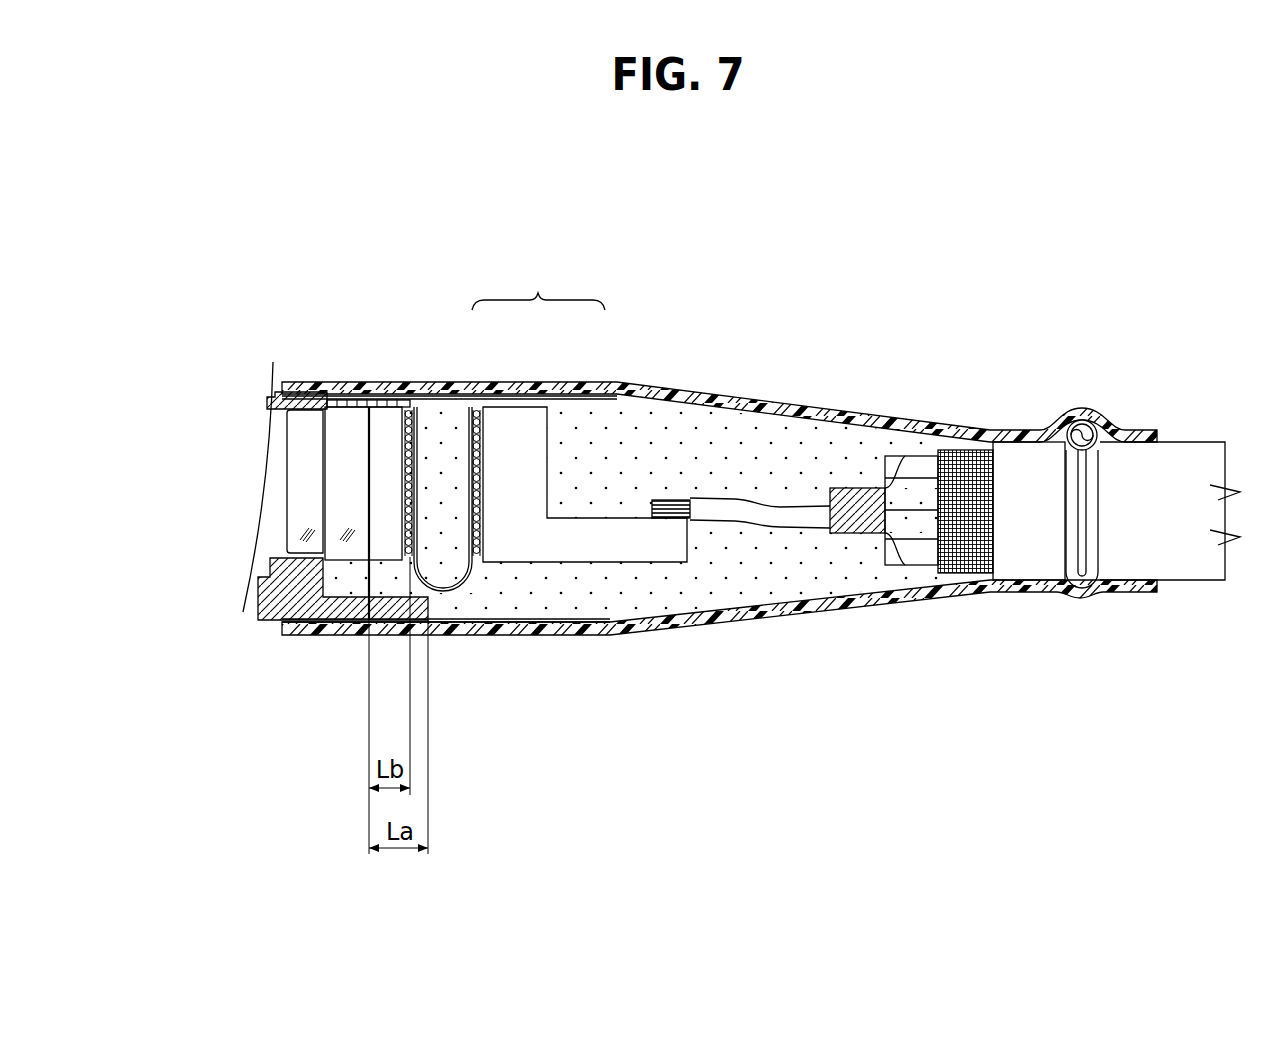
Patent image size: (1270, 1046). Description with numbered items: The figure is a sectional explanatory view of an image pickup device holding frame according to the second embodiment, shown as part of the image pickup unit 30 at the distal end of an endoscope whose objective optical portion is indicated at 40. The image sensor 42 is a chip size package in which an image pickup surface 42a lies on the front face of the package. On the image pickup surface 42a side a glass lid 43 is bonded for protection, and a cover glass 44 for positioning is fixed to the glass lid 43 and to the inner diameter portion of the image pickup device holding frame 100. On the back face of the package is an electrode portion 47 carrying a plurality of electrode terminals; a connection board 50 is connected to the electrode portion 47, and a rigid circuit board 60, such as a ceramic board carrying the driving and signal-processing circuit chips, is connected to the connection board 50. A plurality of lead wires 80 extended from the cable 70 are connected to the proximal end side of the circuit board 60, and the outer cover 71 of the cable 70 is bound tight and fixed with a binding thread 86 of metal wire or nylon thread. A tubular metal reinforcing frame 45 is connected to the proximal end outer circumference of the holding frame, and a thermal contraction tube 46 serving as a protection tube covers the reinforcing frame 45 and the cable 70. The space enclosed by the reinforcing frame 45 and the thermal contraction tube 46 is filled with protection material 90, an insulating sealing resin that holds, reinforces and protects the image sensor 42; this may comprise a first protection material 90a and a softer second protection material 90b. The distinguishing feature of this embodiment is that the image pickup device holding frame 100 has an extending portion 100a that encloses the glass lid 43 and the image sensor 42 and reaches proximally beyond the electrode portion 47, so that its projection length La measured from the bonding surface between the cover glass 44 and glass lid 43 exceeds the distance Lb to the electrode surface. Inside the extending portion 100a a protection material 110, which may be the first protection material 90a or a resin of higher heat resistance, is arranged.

The imaging device 30 is at (502, 255).
The objective lens unit 40 is at (312, 362).
The image sensor 42 is at (393, 395).
The image pickup surface 42a is at (368, 460).
The glass lid 43 is at (340, 480).
The cover glass 44 is at (300, 505).
The reinforcing frame 45 is at (525, 618).
The thermal contraction tube 46 is at (833, 614).
The electrode portion 47 is at (408, 410).
The connection board 50 is at (452, 607).
The circuit board 60 is at (601, 578).
The cable 70 is at (1192, 430).
The outer cover 71 is at (1025, 548).
The lead wires 80 is at (753, 528).
The binding thread 86 is at (1073, 512).
The protection material 90 is at (538, 285).
The first protection material 90a is at (575, 440).
The second protection material 90b is at (457, 427).
The image pickup device holding frame 100 is at (268, 402).
The extending portion 100a is at (300, 590).
The protection material 110 is at (372, 643).